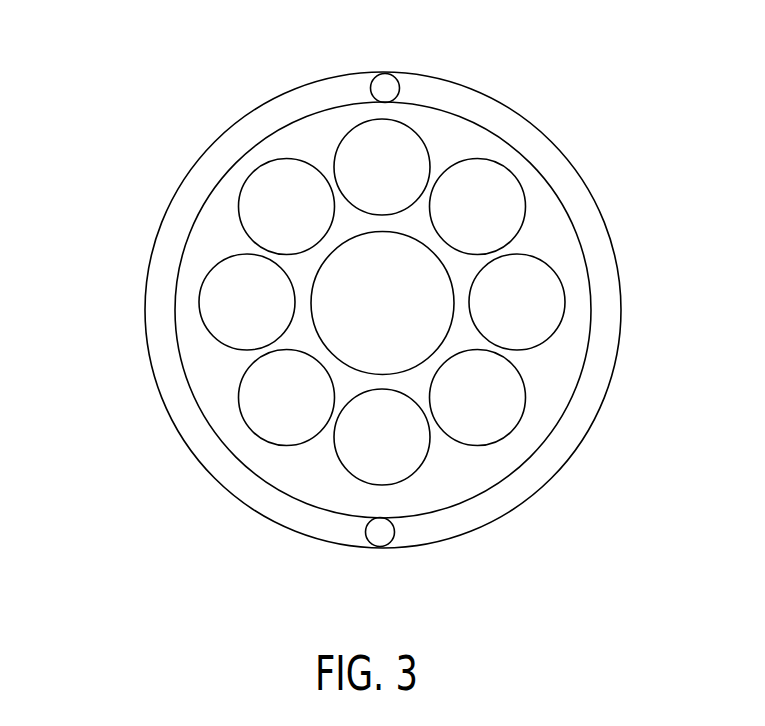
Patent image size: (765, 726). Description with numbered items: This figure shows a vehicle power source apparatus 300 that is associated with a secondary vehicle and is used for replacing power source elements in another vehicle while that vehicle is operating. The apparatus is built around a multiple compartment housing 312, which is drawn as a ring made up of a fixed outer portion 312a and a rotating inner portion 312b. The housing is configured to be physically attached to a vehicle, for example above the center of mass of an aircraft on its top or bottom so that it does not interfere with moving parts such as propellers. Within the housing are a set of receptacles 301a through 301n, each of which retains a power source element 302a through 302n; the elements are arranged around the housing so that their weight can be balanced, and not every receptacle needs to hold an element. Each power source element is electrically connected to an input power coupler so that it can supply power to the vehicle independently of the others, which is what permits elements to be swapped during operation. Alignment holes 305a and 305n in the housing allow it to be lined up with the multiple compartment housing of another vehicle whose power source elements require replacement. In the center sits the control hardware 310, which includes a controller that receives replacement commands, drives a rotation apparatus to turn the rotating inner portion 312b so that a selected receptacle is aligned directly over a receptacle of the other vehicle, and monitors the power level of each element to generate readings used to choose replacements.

The vehicle power source apparatus 300 is at (165, 127).
The multiple compartment housing 312 is at (180, 182).
The fixed outer portion 312a is at (163, 258).
The rotating inner portion 312b is at (193, 358).
The alignment hole 305a is at (383, 83).
The alignment hole 305n is at (382, 540).
The control hardware 310 is at (423, 287).
The receptacle 301a is at (415, 132).
The power source element 302a is at (367, 152).
The receptacle 301n is at (420, 463).
The power source element 302n is at (365, 455).